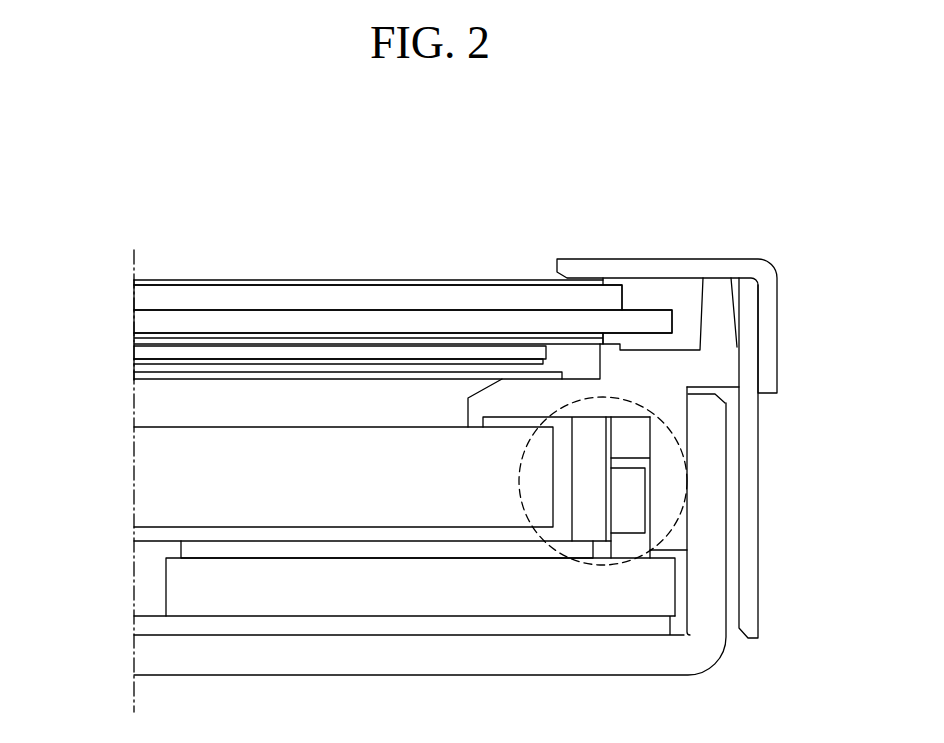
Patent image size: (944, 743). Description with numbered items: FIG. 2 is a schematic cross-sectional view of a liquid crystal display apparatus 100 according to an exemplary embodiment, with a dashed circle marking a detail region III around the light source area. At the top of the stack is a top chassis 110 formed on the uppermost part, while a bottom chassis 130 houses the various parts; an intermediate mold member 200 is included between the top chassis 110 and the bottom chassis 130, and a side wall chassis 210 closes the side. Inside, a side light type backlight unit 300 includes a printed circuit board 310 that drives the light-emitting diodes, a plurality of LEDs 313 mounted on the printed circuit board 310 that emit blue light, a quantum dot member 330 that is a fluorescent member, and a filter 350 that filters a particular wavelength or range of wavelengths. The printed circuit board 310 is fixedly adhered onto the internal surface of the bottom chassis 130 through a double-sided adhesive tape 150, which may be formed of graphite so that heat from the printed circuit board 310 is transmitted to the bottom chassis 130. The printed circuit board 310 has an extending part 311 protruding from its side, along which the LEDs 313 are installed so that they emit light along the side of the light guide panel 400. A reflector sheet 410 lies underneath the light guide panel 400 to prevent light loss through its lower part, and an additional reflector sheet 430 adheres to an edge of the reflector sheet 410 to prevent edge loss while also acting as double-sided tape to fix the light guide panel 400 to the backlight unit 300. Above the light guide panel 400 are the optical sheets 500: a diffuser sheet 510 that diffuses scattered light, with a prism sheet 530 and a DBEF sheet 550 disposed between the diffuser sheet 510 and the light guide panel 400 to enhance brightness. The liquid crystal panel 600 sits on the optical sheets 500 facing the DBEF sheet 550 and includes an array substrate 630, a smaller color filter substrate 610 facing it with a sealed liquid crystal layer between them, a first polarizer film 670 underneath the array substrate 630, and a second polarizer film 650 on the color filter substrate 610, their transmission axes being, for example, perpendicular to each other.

The liquid crystal display apparatus 100 is at (461, 157).
The top chassis 110 is at (650, 268).
The bottom chassis 130 is at (410, 655).
The double-sided adhesive tape 150 is at (263, 627).
The intermediate mold member 200 is at (728, 323).
The side wall chassis 210 is at (750, 586).
The side light type backlight unit 300 is at (713, 487).
The printed circuit board 310 is at (565, 610).
The extending part 311 is at (632, 460).
The LEDs 313 is at (633, 513).
The quantum dot member 330 is at (588, 423).
The filter 350 is at (612, 422).
The light guide panel 400 is at (152, 484).
The reflector sheet 410 is at (140, 533).
The additional reflector sheet 430 is at (187, 548).
The optical sheets 500 is at (294, 353).
The diffuser sheet 510 is at (133, 349).
The prism sheet 530 is at (133, 362).
The dual brightness enhancement film sheet 550 is at (320, 376).
The liquid crystal panel 600 is at (403, 260).
The color filter substrate 610 is at (272, 300).
The array substrate 630 is at (330, 320).
The second polarizer film 650 is at (217, 282).
The first polarizer film 670 is at (228, 218).
The enlarged detail region III is at (647, 400).